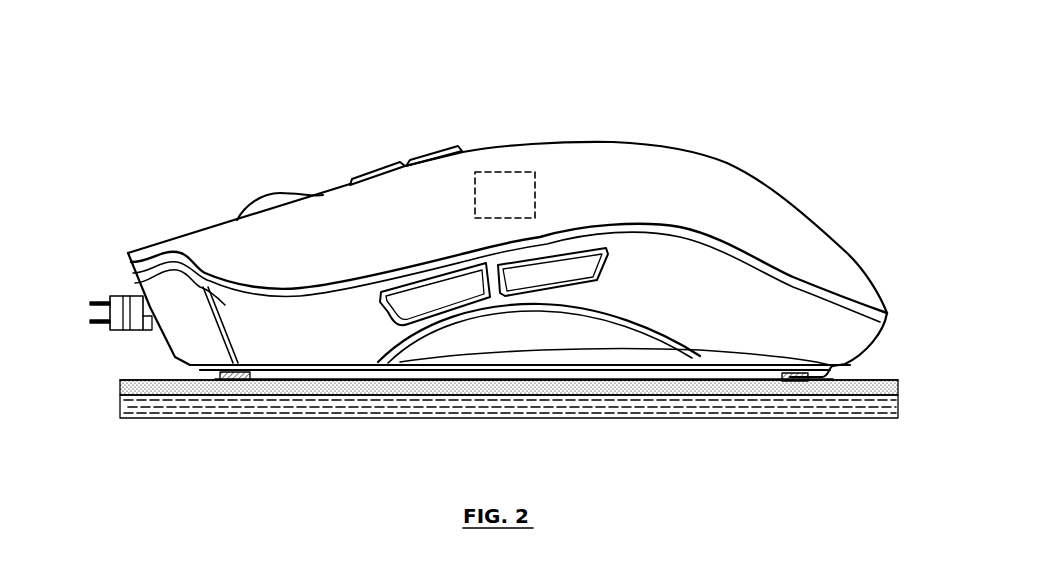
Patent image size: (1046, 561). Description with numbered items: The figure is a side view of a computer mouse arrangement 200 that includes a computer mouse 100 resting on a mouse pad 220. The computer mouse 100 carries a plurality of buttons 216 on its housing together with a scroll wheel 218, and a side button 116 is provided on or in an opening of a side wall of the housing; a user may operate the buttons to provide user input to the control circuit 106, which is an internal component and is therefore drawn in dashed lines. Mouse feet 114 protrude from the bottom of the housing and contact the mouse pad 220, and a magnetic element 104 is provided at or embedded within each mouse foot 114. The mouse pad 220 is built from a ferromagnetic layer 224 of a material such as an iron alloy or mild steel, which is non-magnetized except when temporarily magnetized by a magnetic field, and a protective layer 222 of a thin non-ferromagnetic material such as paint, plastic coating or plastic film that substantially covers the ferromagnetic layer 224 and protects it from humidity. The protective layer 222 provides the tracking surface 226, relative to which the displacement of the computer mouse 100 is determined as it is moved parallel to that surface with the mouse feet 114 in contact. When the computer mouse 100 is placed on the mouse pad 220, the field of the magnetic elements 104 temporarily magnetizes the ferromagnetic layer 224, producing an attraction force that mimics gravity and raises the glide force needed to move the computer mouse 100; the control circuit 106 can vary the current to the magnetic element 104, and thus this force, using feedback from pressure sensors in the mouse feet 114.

The computer mouse arrangement 200 is at (835, 63).
The computer mouse 100 is at (816, 184).
The magnetic element 104 is at (240, 383).
The control circuit 106 is at (510, 172).
The mouse foot 114 is at (220, 369).
The side button 116 is at (383, 302).
The buttons 216 is at (372, 168).
The scroll wheel 218 is at (260, 197).
The mouse pad 220 is at (774, 433).
The protective layer 222 is at (150, 387).
The ferromagnetic layer 224 is at (140, 407).
The tracking surface 226 is at (883, 375).